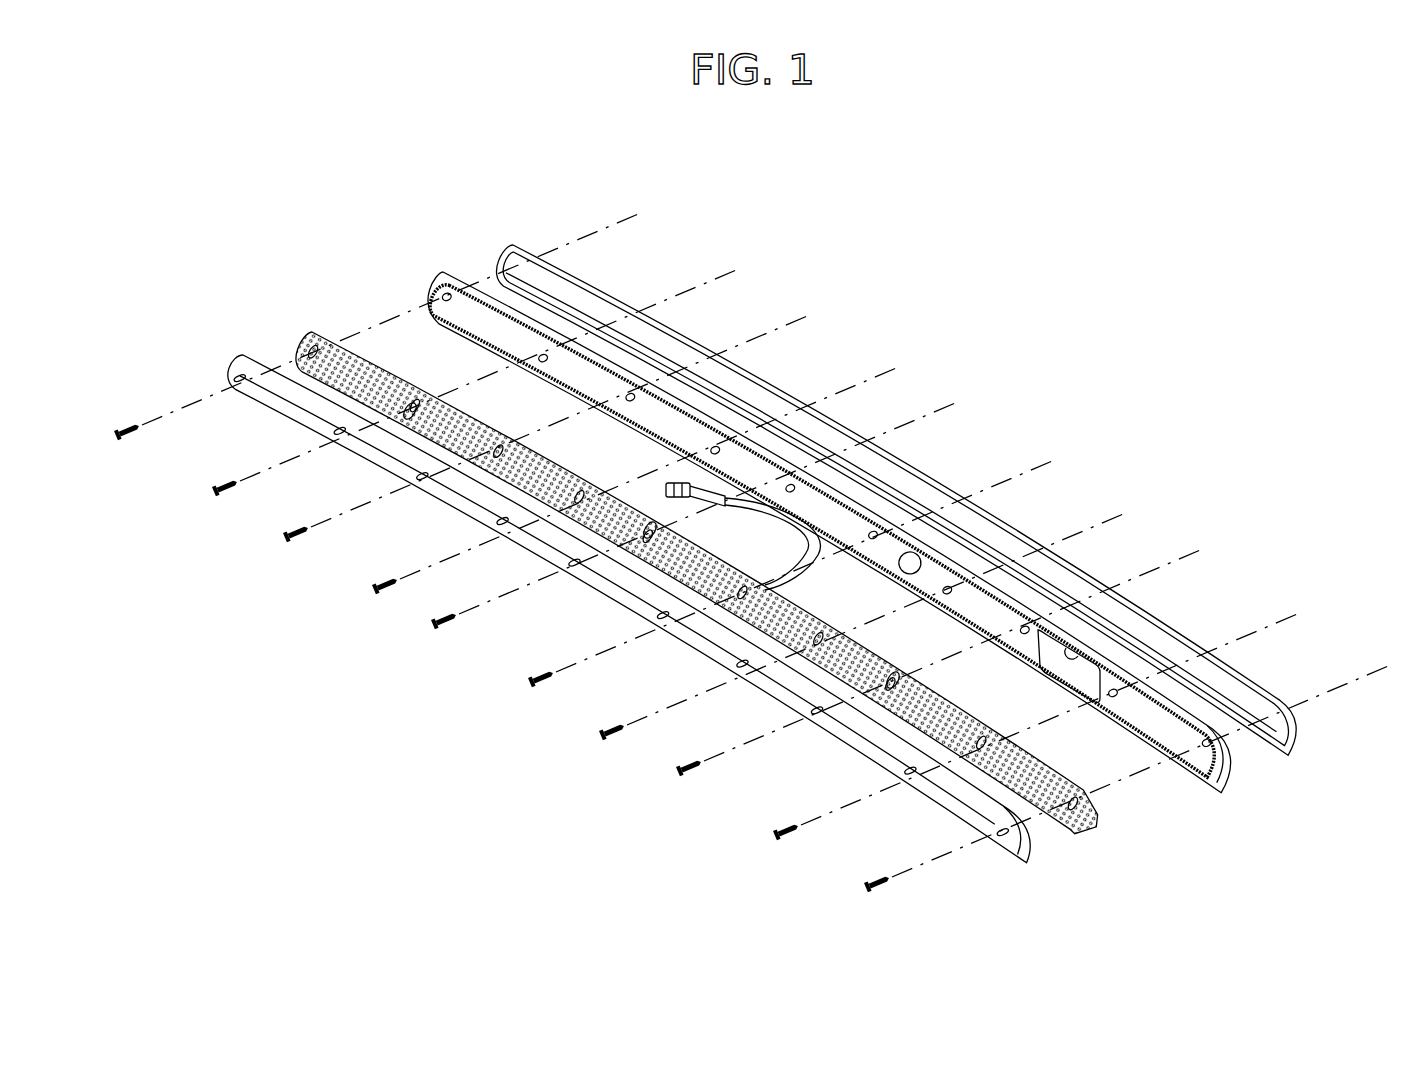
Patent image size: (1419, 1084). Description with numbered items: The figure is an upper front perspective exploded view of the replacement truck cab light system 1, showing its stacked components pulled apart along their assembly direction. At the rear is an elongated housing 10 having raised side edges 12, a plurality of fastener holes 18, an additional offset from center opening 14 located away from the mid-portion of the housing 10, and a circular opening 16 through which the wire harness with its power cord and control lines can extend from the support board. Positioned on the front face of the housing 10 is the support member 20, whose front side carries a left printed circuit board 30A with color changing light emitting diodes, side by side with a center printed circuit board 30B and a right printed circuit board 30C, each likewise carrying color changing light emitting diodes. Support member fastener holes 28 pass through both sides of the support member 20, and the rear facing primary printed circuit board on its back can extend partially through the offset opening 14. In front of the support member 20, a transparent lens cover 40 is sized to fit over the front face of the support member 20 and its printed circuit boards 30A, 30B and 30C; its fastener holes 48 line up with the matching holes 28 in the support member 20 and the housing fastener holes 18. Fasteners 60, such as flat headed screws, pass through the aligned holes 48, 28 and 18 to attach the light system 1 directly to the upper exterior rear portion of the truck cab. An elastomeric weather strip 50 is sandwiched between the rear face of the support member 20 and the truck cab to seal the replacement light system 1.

The replacement truck cab light system 1 is at (205, 120).
The elongated housing 10 is at (440, 280).
The raised side edges 12 is at (1224, 790).
The offset from center opening 14 is at (1078, 650).
The circular opening 16 is at (915, 556).
The fastener holes 18 is at (545, 356).
The support member 20 is at (1100, 829).
The support member fastener holes 28 is at (988, 747).
The left printed circuit board 30A is at (428, 412).
The center printed circuit board 30B is at (660, 560).
The right printed circuit board 30C is at (902, 683).
The transparent lens cover 40 is at (1030, 864).
The lens cover fastener holes 48 is at (910, 779).
The elastomeric weather strip 50 is at (500, 258).
The fasteners 60 is at (292, 535).